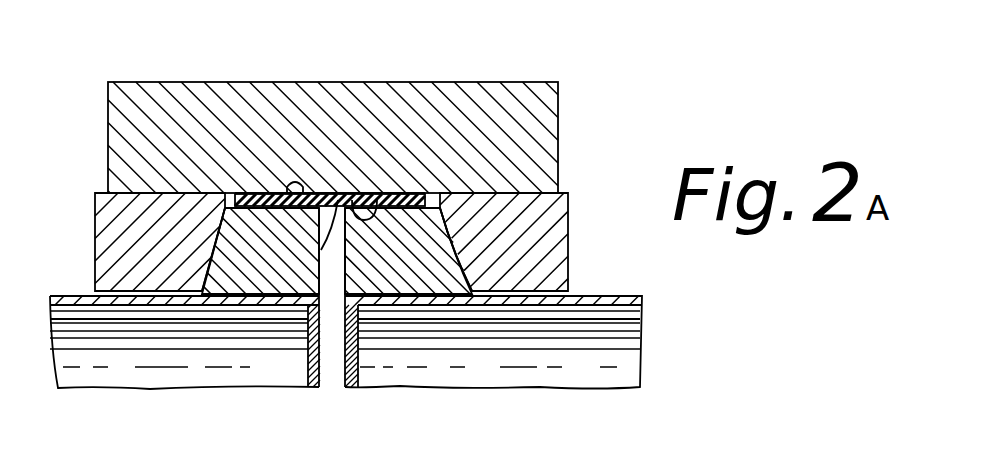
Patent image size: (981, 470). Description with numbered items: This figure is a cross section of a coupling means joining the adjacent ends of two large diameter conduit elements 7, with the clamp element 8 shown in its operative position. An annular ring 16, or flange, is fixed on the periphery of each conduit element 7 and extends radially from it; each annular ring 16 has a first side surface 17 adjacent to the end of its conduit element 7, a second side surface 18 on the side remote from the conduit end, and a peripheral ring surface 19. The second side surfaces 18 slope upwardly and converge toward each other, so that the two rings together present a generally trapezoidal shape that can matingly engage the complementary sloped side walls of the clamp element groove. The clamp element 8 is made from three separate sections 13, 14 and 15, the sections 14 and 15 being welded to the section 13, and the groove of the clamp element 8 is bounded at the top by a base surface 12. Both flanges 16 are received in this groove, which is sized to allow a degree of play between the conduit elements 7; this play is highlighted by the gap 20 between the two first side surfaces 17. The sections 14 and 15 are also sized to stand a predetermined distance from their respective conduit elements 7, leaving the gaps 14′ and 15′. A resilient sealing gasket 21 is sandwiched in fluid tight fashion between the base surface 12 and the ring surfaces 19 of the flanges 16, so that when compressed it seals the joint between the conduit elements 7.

The conduit element 7 is at (207, 373).
The clamp element 8 is at (341, 230).
The base surface 12 is at (393, 200).
The section 13 is at (502, 100).
The section 14 is at (112, 230).
The gap 14′ is at (125, 292).
The section 15 is at (545, 227).
The gap 15′ is at (533, 289).
The annular ring 16 is at (258, 270).
The first side surface 17 is at (338, 200).
The second side surface 18 is at (217, 241).
The peripheral ring surface 19 is at (375, 198).
The gap 20 is at (335, 357).
The resilient sealing gasket 21 is at (357, 207).